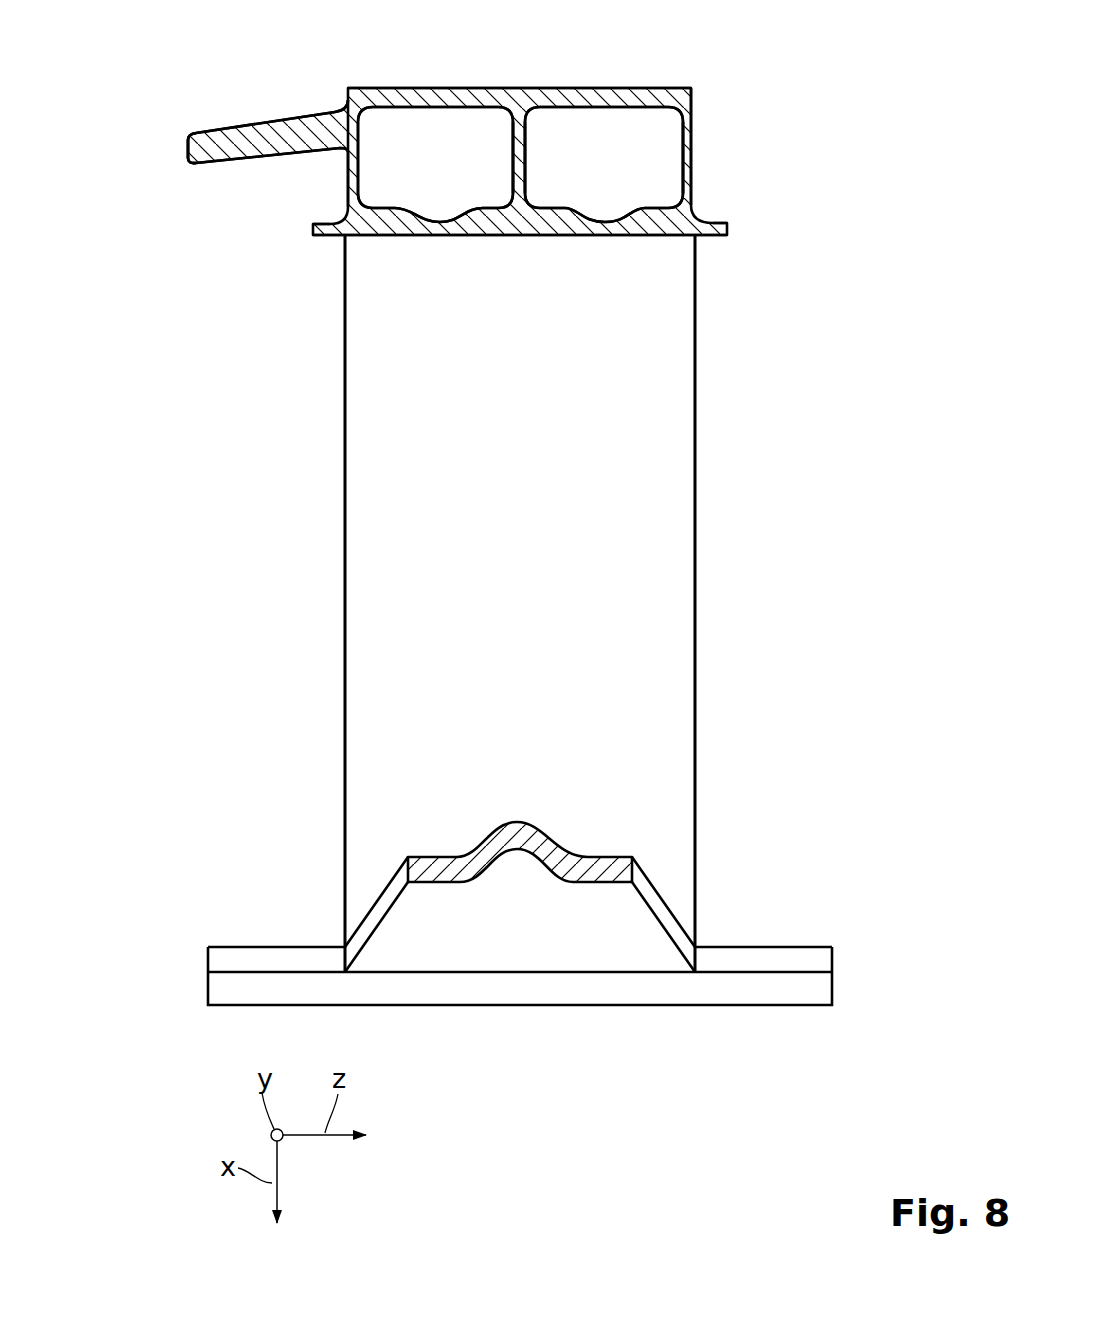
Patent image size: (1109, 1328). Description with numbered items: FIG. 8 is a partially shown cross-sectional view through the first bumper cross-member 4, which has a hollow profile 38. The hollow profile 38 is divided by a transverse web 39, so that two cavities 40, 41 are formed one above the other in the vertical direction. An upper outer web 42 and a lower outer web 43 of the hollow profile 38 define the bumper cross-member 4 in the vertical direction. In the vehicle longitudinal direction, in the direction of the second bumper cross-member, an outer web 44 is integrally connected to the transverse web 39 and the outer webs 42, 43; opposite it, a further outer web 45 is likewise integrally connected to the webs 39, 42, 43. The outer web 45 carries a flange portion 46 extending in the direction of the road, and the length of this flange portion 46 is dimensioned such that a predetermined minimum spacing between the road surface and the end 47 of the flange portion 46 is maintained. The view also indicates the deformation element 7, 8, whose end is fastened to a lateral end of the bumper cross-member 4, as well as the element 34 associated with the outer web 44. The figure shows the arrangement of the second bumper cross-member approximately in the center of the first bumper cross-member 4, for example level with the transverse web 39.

The bumper cross-member 4 is at (652, 150).
The deformation element 7 is at (466, 603).
The deformation element 8 is at (345, 632).
The bottom flange 34 is at (520, 268).
The hollow profile 38 is at (600, 92).
The transverse web 39 is at (522, 138).
The cavity 40 is at (435, 164).
The cavity 41 is at (604, 164).
The upper outer web 42 is at (353, 168).
The lower outer web 43 is at (688, 183).
The outer web 44 is at (522, 237).
The outer web 45 is at (519, 52).
The flange portion 46 is at (232, 131).
The end of the flange portion 47 is at (186, 150).